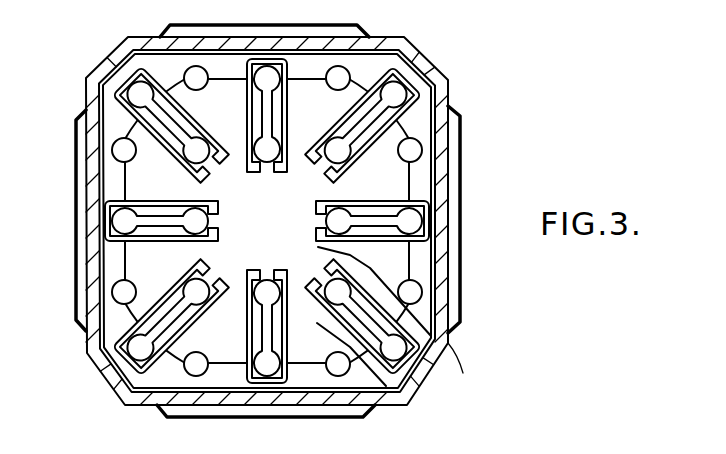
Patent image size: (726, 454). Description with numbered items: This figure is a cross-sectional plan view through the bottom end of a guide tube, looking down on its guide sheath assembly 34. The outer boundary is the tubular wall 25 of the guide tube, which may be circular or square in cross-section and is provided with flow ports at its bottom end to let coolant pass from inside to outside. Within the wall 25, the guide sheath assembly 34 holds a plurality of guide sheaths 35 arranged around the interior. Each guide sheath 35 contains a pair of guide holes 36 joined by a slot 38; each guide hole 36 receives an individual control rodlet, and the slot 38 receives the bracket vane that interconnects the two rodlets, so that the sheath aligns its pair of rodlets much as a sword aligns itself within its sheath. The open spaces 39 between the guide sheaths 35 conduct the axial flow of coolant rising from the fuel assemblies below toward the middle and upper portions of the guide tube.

The tubular wall 25 is at (87, 336).
The guide sheath assembly 34 is at (118, 124).
The guide sheath 35 is at (362, 194).
The guide hole 36 is at (142, 97).
The slot 38 is at (185, 110).
The open space 39 is at (408, 406).